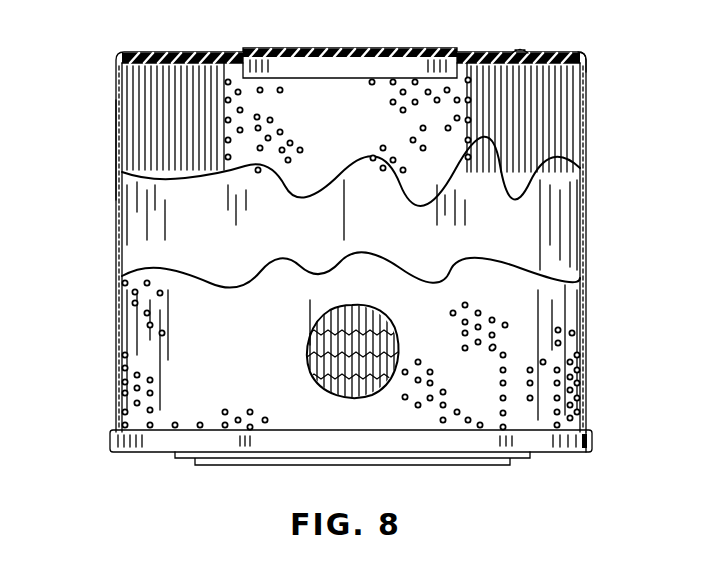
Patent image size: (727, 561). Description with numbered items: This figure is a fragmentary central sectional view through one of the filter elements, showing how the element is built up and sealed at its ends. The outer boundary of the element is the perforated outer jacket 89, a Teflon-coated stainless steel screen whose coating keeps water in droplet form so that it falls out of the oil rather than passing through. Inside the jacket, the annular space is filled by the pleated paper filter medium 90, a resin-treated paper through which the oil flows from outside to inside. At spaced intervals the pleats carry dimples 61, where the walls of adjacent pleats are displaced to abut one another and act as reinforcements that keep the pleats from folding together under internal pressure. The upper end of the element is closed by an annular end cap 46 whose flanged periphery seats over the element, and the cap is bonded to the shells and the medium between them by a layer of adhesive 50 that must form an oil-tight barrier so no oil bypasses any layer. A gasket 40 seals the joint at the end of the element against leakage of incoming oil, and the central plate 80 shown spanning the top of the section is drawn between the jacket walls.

The gasket 40 is at (482, 52).
The annular end cap 46 is at (590, 72).
The layer of adhesive 50 is at (528, 50).
The perforated top plate 80 is at (232, 116).
The outer jacket 89 is at (118, 150).
The pleated paper filter medium 90 is at (127, 110).
The dimples 61 is at (313, 386).